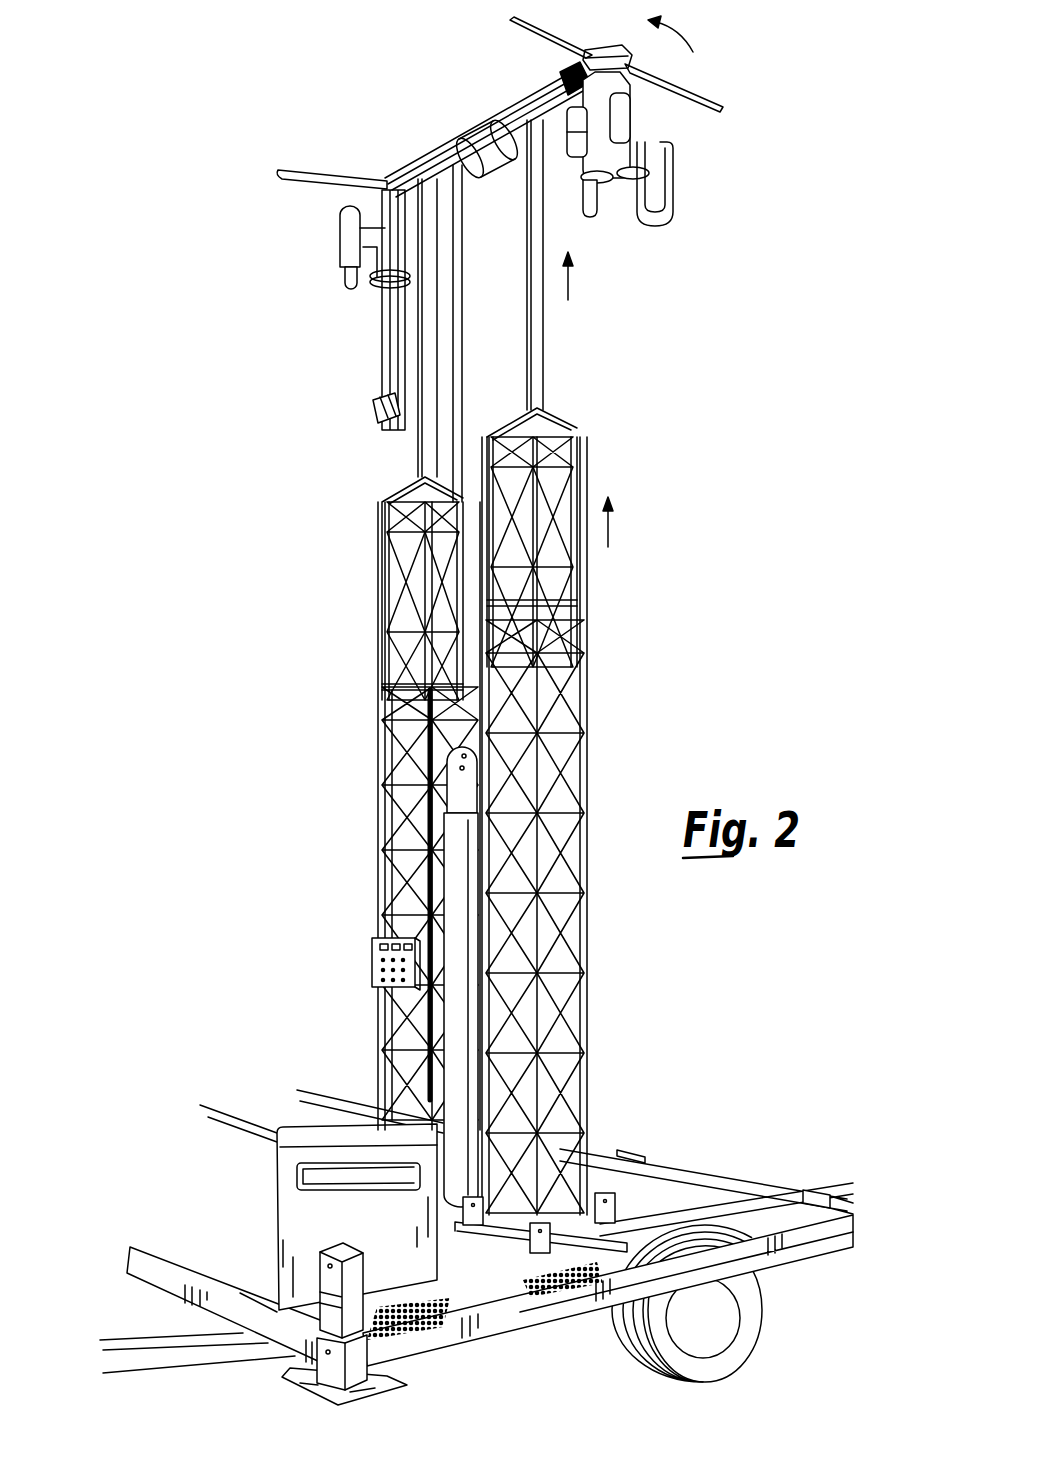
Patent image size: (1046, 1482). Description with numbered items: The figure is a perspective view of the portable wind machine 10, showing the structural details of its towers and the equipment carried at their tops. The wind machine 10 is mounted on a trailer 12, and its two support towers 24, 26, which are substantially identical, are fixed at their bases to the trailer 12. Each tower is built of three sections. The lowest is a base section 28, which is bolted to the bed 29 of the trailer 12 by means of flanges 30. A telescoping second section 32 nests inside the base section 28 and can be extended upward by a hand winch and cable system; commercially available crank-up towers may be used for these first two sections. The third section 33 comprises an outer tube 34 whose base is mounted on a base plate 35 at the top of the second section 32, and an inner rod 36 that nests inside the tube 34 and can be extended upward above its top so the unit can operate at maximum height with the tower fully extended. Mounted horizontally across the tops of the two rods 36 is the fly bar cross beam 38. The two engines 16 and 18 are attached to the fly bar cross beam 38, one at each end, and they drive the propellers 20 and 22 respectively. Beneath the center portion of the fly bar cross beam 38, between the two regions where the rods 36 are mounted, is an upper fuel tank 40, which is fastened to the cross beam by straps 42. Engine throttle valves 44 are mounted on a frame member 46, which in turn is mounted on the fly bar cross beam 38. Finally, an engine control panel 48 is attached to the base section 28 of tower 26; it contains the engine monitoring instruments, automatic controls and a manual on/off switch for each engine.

The portable wind machine 10 is at (742, 597).
The trailer 12 is at (476, 1247).
The engine 16 is at (637, 128).
The engine 18 is at (350, 233).
The propeller 20 is at (678, 88).
The propeller 22 is at (362, 152).
The support tower 24 is at (592, 668).
The support tower 26 is at (372, 742).
The base section 28 is at (378, 1023).
The bed 29 is at (530, 1282).
The flanges 30 is at (473, 1195).
The telescoping second section 32 is at (580, 500).
The third section 33 is at (554, 393).
The outer tube 34 is at (530, 575).
The base plate 35 is at (570, 1013).
The inner rod 36 is at (437, 322).
The fly bar cross beam 38 is at (512, 112).
The upper fuel tank 40 is at (493, 172).
The straps 42 is at (463, 138).
The engine throttle valves 44 is at (372, 398).
The frame member 46 is at (380, 352).
The engine control panel 48 is at (373, 962).